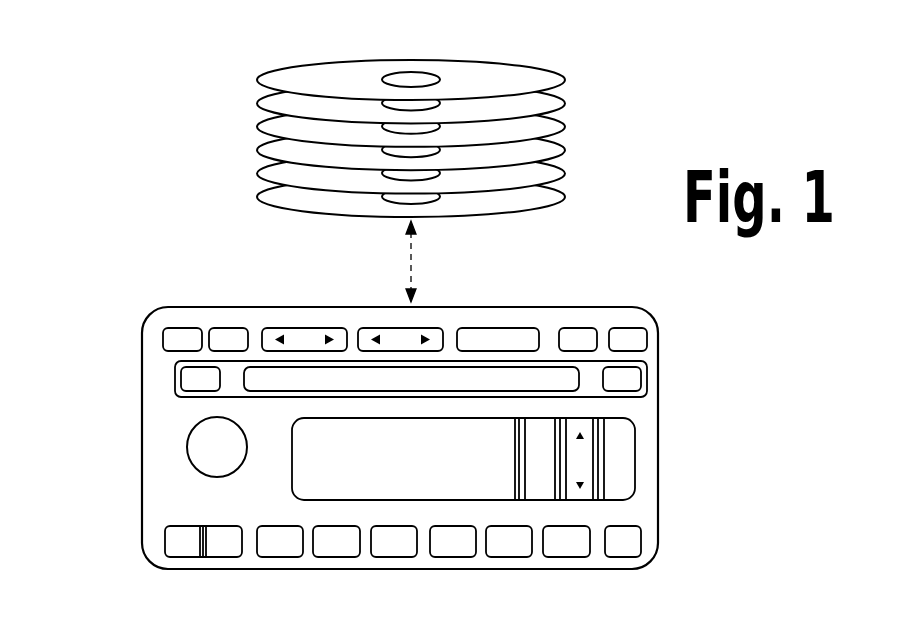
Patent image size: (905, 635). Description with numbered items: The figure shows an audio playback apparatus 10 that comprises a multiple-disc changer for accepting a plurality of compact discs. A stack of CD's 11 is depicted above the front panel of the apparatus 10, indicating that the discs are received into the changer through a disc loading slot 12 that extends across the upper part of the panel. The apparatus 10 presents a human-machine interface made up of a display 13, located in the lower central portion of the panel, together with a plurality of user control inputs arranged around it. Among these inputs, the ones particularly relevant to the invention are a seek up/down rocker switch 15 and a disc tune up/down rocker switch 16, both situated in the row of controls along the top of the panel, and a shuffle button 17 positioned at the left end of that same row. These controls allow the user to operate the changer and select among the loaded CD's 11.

The audio playback apparatus 10 is at (142, 343).
The CD's 11 is at (250, 202).
The disc loading slot 12 is at (546, 371).
The display 13 is at (303, 481).
The seek up/down rocker switch 15 is at (383, 327).
The disc tune up/down rocker switch 16 is at (279, 328).
The shuffle button 17 is at (176, 328).